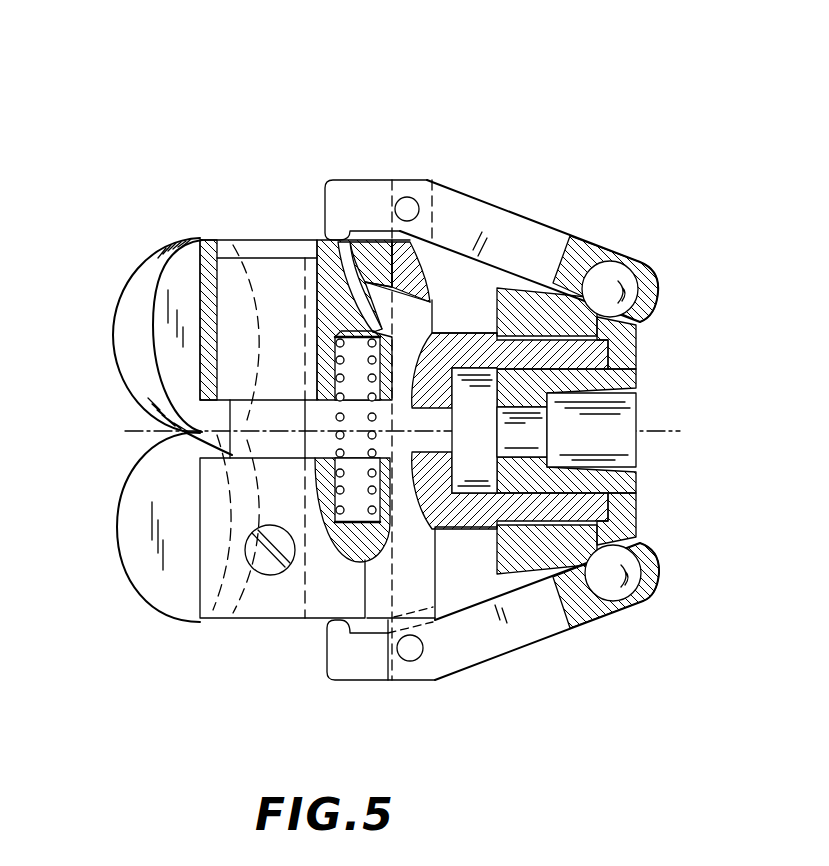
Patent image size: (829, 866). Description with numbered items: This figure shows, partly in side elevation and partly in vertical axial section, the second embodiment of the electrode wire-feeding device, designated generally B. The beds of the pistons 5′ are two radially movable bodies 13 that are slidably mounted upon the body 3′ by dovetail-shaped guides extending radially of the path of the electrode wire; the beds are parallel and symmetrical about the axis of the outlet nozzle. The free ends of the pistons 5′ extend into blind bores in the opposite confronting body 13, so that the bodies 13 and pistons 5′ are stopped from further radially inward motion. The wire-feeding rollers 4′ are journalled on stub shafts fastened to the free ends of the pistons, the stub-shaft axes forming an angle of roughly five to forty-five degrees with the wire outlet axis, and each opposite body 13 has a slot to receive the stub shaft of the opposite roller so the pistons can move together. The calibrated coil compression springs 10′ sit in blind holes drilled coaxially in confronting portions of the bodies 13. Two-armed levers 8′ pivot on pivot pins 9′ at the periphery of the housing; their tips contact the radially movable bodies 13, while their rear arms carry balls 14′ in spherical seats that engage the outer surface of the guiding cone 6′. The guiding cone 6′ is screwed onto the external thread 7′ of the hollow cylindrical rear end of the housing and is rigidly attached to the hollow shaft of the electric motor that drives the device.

The electrode wire-feeding device B is at (386, 137).
The body 3′ is at (434, 241).
The wire-feeding rollers 4′ is at (128, 342).
The pistons 5′ is at (263, 267).
The guiding cone 6′ is at (531, 300).
The external thread 7′ is at (597, 357).
The two-armed levers 8′ is at (362, 673).
The pivot pins 9′ is at (412, 652).
The calibrated coil compression springs 10′ is at (365, 505).
The radially movable bodies 13 is at (313, 238).
The balls 14′ is at (627, 278).